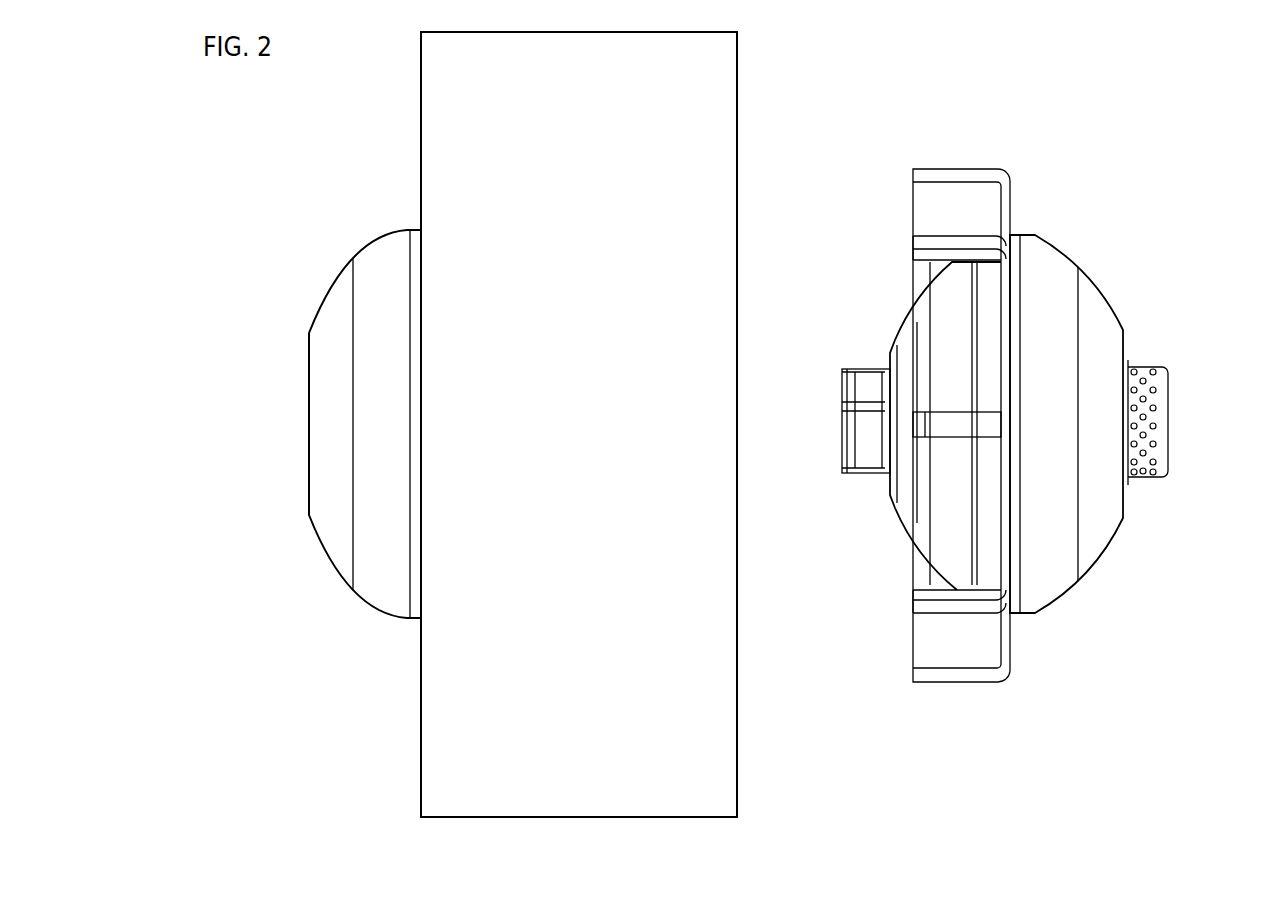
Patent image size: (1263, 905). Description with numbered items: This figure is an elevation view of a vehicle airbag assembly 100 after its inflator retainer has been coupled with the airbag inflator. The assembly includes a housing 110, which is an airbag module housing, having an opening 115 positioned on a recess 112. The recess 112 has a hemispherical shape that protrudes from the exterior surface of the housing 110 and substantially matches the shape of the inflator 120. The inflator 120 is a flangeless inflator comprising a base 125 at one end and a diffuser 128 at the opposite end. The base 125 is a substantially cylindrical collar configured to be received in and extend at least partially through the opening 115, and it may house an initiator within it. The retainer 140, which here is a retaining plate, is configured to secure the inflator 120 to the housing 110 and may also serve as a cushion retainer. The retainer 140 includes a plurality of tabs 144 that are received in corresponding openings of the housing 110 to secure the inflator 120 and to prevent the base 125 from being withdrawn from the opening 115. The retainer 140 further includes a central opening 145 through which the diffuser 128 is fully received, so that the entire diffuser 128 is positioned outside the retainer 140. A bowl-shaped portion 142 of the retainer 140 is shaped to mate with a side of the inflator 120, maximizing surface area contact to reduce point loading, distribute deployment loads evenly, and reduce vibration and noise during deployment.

The vehicle airbag assembly 100 is at (1013, 97).
The housing 110 is at (557, 757).
The recess 112 is at (382, 587).
The opening 115 is at (307, 463).
The inflator 120 is at (918, 307).
The base 125 is at (851, 476).
The diffuser 128 is at (1163, 478).
The retainer 140 is at (1066, 441).
The shaped portion 142 is at (1053, 258).
The tabs 144 is at (963, 673).
The central opening 145 is at (1138, 350).